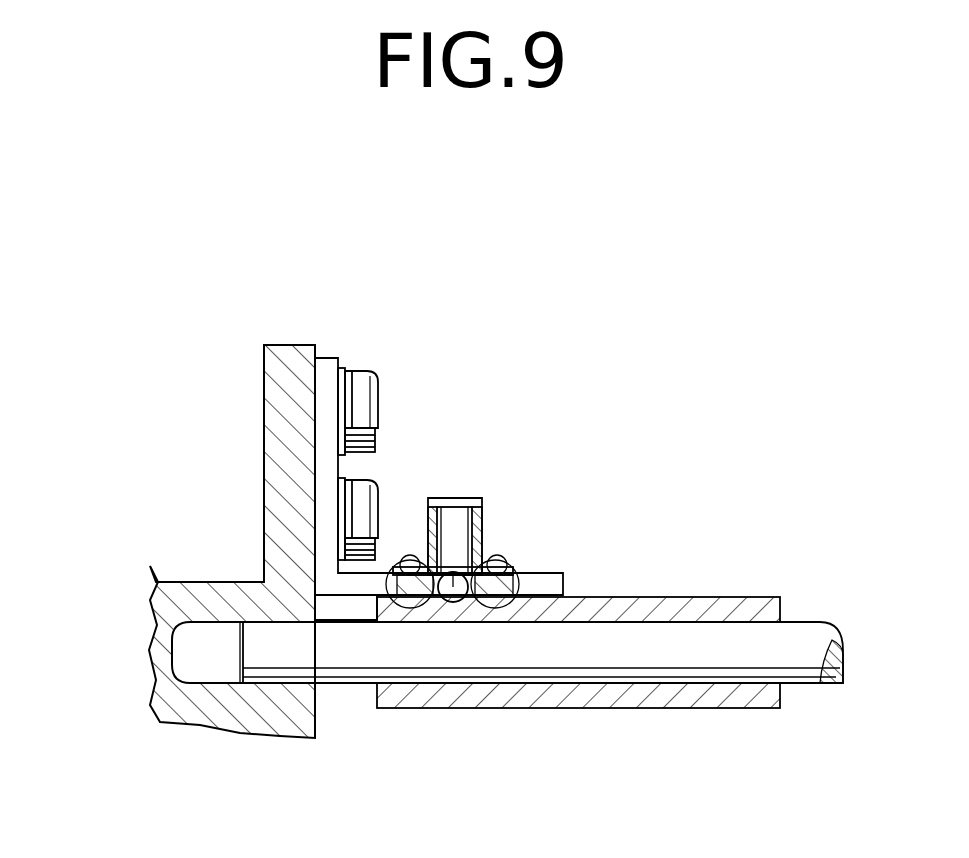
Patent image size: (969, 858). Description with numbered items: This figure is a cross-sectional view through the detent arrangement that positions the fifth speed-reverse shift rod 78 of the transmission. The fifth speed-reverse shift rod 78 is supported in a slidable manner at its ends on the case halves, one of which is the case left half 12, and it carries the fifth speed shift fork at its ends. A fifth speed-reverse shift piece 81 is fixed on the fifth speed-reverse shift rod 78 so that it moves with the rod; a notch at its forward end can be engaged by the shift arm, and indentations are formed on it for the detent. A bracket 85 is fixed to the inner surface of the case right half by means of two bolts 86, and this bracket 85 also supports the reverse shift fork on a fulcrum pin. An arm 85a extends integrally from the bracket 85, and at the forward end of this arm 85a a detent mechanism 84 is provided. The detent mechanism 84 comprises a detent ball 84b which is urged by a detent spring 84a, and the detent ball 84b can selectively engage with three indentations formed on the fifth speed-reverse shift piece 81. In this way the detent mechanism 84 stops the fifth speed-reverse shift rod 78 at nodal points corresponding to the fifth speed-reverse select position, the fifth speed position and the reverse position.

The case left half 12 is at (186, 592).
The fifth speed-reverse shift rod 78 is at (730, 630).
The fifth speed-reverse shift piece 81 is at (686, 598).
The detent mechanism 84 is at (554, 480).
The detent spring 84a is at (500, 531).
The detent ball 84b is at (458, 530).
The bracket 85 is at (325, 457).
The arm 85a is at (546, 578).
The bolts 86 is at (365, 410).